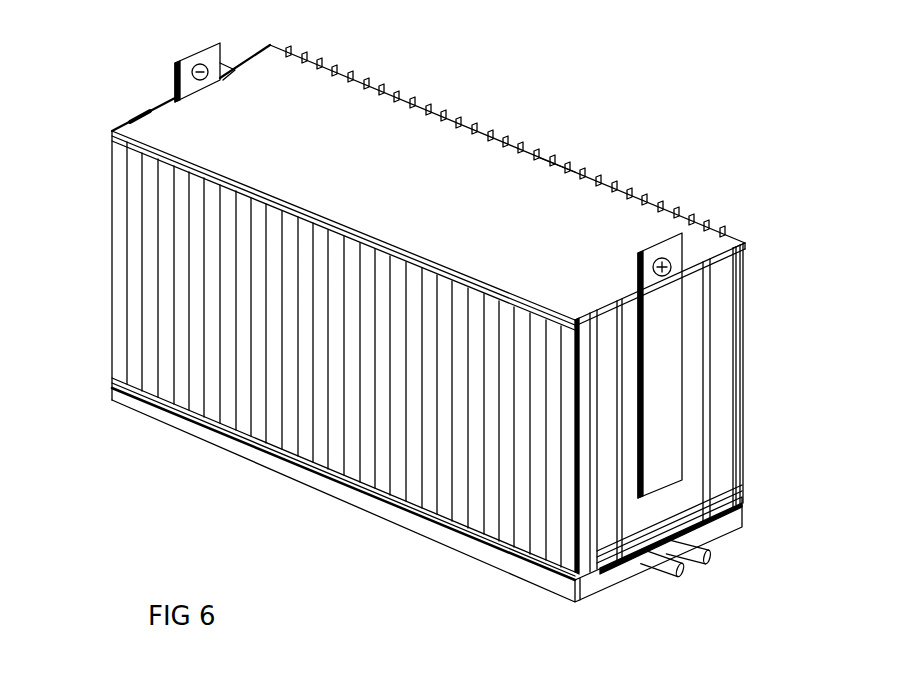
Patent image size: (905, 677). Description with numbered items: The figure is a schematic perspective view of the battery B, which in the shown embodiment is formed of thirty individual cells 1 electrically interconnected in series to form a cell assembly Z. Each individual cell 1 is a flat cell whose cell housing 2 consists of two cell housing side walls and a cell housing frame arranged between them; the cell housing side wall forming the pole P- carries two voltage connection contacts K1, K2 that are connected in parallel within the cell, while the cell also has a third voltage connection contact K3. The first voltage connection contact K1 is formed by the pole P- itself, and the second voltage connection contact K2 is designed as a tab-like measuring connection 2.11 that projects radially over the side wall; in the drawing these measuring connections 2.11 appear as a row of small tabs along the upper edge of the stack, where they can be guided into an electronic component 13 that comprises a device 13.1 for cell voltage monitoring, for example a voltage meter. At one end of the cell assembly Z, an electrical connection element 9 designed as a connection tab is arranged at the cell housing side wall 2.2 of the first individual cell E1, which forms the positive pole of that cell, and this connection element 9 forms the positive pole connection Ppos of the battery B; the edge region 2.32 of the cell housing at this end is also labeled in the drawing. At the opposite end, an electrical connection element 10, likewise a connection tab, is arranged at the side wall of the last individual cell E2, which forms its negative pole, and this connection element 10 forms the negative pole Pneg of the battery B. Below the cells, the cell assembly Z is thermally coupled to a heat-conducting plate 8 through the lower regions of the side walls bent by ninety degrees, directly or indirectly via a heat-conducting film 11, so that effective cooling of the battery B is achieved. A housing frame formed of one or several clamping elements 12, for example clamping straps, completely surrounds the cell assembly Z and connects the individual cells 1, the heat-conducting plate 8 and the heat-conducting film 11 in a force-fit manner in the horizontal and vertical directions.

The battery B is at (786, 86).
The individual cell 1 is at (275, 428).
The cell housing 2 is at (600, 552).
The measuring connection 2.11 is at (418, 103).
The cell housing side wall 2.2 is at (678, 495).
The end cell edge 2.32 is at (745, 382).
The heat-conducting plate 8 is at (390, 515).
The electrical connection element 9 is at (662, 325).
The electrical connection element 10 is at (213, 53).
The heat-conducting film 11 is at (300, 473).
The clamping element 12 is at (720, 417).
The electronic component 13 is at (557, 202).
The device for cell voltage monitoring 13.1 is at (737, 243).
The first voltage connection contact K1 is at (370, 68).
The second voltage connection contact K2 is at (104, 178).
The voltage connection contact K3 is at (707, 547).
The first individual cell E1 is at (695, 445).
The last individual cell E2 is at (120, 235).
The positive pole connection Ppos is at (673, 272).
The negative pole Pneg is at (187, 83).
The pole P- is at (104, 293).
The cell assembly Z is at (210, 398).